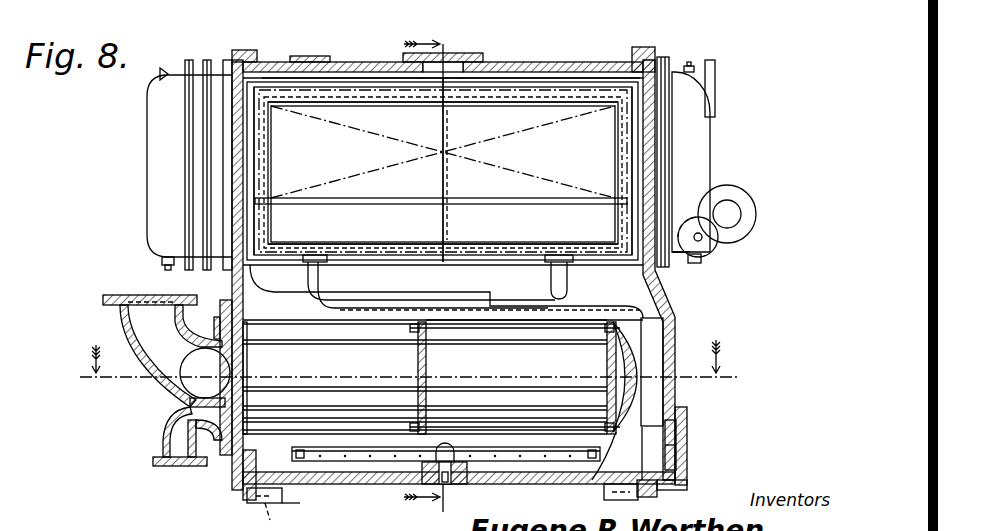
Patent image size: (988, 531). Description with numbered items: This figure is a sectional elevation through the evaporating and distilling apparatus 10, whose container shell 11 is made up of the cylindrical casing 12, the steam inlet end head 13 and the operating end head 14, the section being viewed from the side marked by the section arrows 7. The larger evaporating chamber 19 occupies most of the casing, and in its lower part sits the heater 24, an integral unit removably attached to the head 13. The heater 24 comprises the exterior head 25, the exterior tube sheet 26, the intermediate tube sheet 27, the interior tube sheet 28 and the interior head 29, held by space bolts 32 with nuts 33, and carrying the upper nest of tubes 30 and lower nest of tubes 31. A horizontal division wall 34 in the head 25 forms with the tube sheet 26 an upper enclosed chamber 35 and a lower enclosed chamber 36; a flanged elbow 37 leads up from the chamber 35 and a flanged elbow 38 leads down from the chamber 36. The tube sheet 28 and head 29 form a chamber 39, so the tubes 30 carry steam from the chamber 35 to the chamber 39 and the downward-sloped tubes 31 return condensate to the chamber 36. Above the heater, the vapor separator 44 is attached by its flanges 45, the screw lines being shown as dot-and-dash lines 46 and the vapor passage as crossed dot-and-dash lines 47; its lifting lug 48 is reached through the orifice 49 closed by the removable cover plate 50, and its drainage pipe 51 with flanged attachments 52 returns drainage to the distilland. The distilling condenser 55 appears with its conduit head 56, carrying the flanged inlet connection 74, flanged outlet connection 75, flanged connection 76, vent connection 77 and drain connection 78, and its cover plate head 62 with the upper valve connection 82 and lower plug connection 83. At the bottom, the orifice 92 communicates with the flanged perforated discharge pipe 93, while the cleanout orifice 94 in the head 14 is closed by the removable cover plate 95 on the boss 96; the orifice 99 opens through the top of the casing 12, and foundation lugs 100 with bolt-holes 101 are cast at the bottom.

The section line 7- 7 is at (397, 366).
The evaporating and distilling apparatus 10 is at (428, 270).
The container shell 11 is at (352, 40).
The cylindrical casing 12 is at (582, 54).
The steam inlet end head 13 is at (240, 52).
The operating end head 14 is at (652, 49).
The evaporating chamber 19 is at (240, 494).
The heater 24 is at (186, 404).
The exterior head 25 is at (230, 458).
The exterior tube sheet 26 is at (205, 373).
The intermediate tube sheet 27 is at (434, 352).
The interior tube sheet 28 is at (606, 360).
The interior head 29 is at (640, 355).
The upper nest of tubes 30 is at (336, 338).
The lower nest of tubes 31 is at (378, 418).
The space bolts 32 is at (508, 332).
The nuts 33 is at (410, 328).
The division wall 34 is at (258, 360).
The upper enclosed chamber 35 is at (188, 345).
The lower enclosed chamber 36 is at (172, 420).
The flanged elbow 37 is at (120, 322).
The flanged elbow 38 is at (156, 460).
The chamber 39 is at (628, 384).
The vapor separator 44 is at (398, 216).
The flanges 45 is at (312, 100).
The dot-and-dash lines 46 is at (610, 92).
The crossed dot-and-dash lines 47 is at (364, 130).
The lifting lug 48 is at (447, 131).
The orifice 49 is at (425, 64).
The removable cover plate 50 is at (480, 56).
The drainage pipe 51 is at (437, 300).
The removable flanged attachments 52 is at (308, 262).
The distilling condenser 55 is at (150, 190).
The conduit head 56 is at (712, 152).
The cover plate head 62 is at (150, 150).
The flanged inlet connection 74 is at (745, 204).
The flanged outlet connection 75 is at (716, 244).
The flanged connection 76 is at (716, 78).
The vent connection 77 is at (694, 64).
The drain connection 78 is at (697, 264).
The upper valve connection 82 is at (158, 78).
The lower plug connection 83 is at (162, 264).
The orifice 92 is at (452, 485).
The flanged perforated discharge pipe 93 is at (548, 462).
The orifice 94 is at (678, 438).
The removable cover plate 95 is at (688, 458).
The boss 96 is at (672, 486).
The orifice 99 is at (308, 56).
The foundation lugs 100 is at (282, 503).
The bolt-holes 101 is at (275, 517).